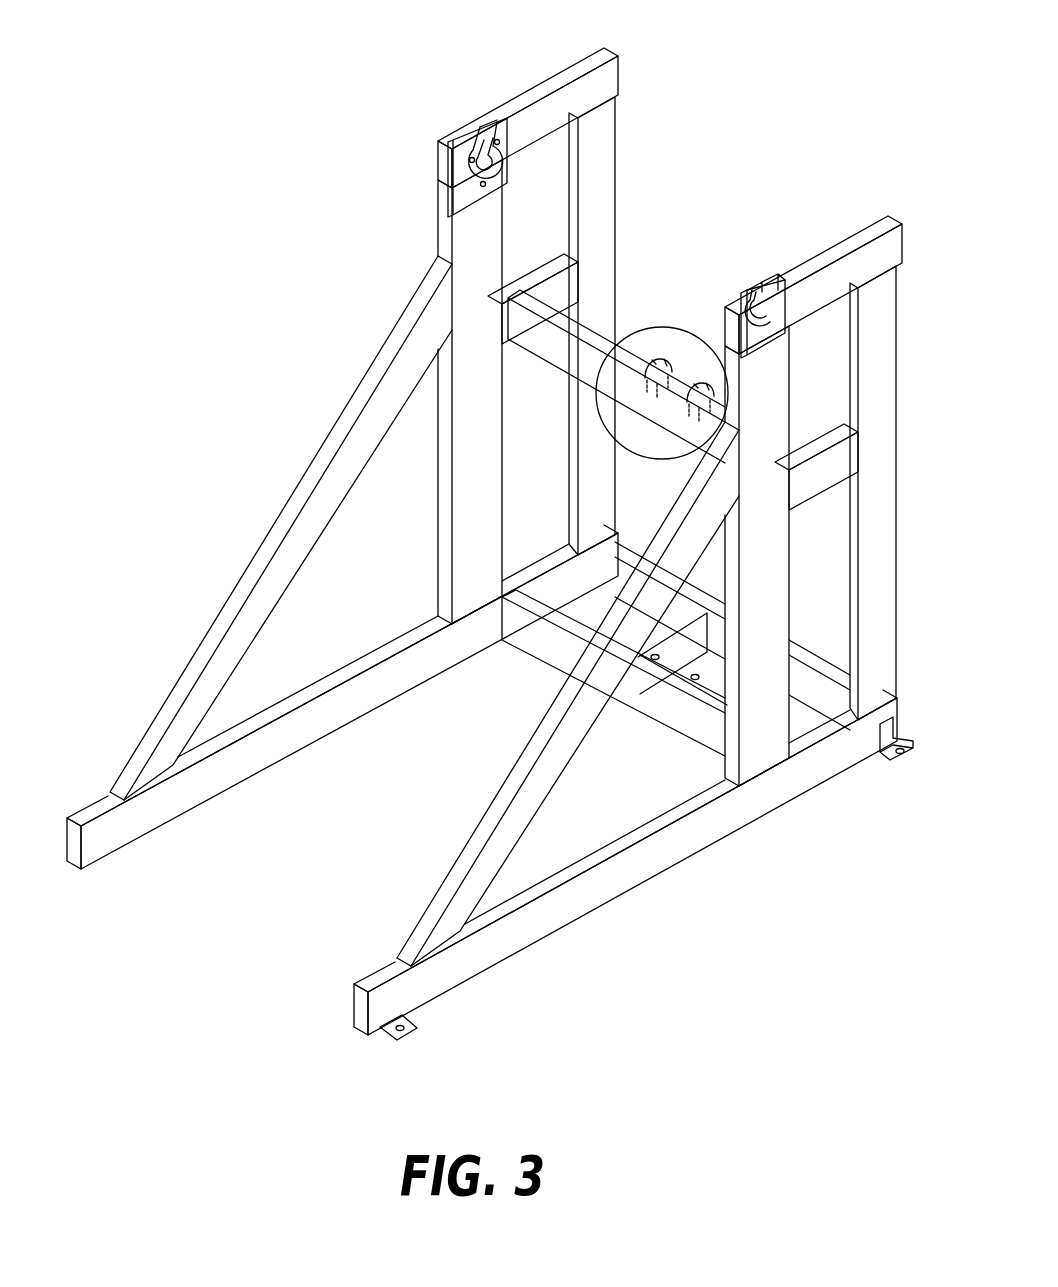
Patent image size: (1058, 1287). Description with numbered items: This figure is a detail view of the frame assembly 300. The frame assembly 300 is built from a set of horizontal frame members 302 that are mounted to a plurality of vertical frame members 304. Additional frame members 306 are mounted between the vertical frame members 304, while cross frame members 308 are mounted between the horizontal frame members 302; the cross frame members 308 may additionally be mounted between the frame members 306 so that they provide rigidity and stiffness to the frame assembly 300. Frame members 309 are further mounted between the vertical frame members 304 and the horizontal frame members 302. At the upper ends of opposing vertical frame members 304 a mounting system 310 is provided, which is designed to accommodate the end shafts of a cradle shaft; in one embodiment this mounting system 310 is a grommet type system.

The frame assembly 300 is at (826, 152).
The horizontal frame members 302 is at (343, 706).
The vertical frame members 304 is at (882, 552).
The frame members 306 is at (823, 468).
The cross frame members 308 is at (650, 332).
The frame members 309 is at (325, 497).
The mounting system 310 is at (480, 122).